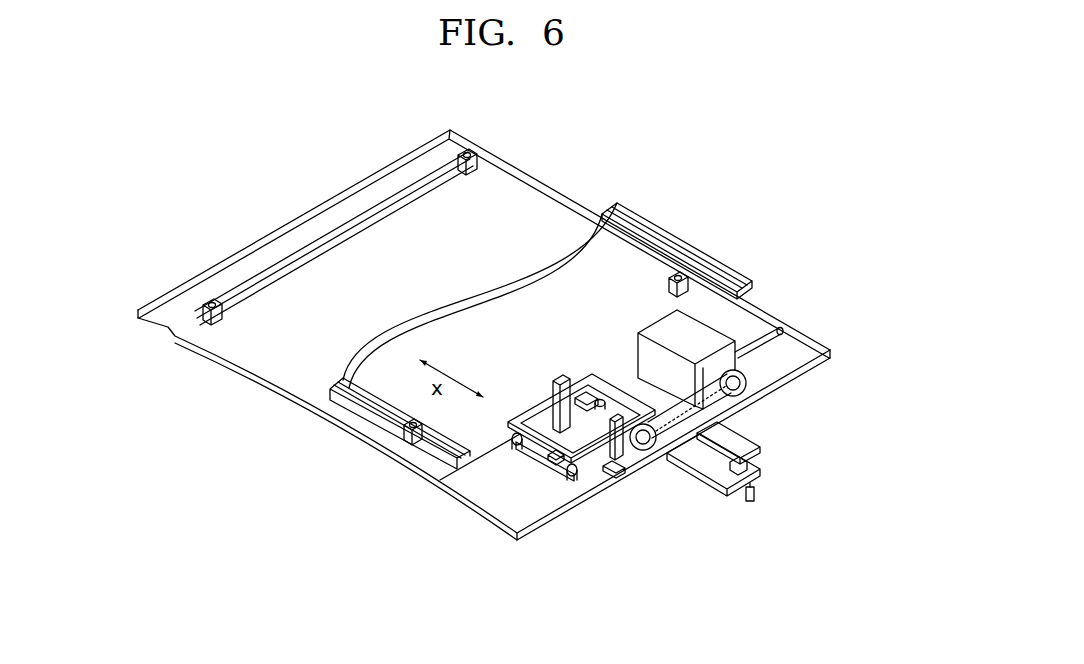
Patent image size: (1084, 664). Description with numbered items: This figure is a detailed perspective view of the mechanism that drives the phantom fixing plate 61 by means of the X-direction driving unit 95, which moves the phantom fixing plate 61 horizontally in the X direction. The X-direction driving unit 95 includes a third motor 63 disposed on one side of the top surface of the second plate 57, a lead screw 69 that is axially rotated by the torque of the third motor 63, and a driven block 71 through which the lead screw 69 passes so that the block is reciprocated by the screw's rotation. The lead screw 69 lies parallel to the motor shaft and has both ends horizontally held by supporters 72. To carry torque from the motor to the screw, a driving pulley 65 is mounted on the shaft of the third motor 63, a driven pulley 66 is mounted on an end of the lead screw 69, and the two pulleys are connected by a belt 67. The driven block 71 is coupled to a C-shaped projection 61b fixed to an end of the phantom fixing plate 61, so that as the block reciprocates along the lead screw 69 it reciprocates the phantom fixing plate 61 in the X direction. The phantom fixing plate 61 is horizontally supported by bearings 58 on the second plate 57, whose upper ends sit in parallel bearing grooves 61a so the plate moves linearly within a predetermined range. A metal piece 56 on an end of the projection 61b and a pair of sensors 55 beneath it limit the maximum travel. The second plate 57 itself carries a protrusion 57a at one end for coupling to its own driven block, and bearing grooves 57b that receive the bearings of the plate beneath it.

The sensors 55 is at (566, 486).
The metal piece 56 is at (516, 449).
The second plate 57 is at (275, 409).
The protrusion 57a is at (703, 484).
The bearing grooves 57b is at (485, 461).
The bearings 58 is at (209, 297).
The phantom fixing plate 61 is at (650, 200).
The bearing grooves 61a is at (705, 343).
The C-shaped projection 61b is at (537, 410).
The third motor 63 is at (740, 345).
The driving pulley 65 is at (750, 395).
The driven pulley 66 is at (640, 452).
The belt 67 is at (715, 433).
The lead screw 69 is at (588, 390).
The driven block 71 is at (601, 398).
The supporters 72 is at (562, 380).
The X-direction driving unit 95 is at (465, 501).